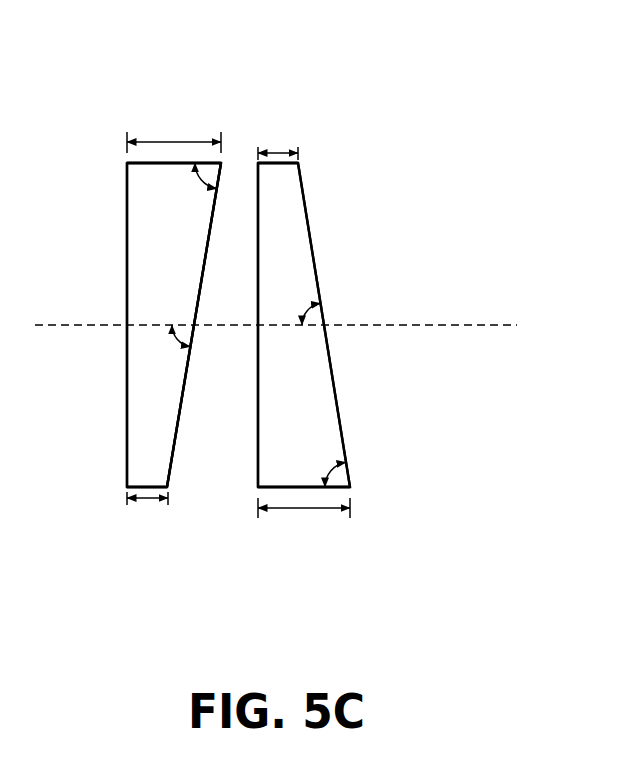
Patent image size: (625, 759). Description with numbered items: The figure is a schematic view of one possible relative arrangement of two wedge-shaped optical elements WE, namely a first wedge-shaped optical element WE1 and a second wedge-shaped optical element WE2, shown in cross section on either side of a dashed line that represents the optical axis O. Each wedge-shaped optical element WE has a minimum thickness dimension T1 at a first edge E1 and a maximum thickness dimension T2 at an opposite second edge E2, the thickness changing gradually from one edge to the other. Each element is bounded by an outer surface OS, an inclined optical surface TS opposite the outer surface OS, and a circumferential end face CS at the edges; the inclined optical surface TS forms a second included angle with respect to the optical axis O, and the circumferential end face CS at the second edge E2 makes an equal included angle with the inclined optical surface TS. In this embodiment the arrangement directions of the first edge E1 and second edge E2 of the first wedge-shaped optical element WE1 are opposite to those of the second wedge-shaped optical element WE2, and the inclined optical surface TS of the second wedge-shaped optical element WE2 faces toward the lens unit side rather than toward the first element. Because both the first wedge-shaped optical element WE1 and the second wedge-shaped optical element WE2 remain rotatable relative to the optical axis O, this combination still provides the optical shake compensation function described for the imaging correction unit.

The wedge-shaped optical element WE is at (352, 87).
The first wedge-shaped optical element WE1 is at (143, 263).
The second wedge-shaped optical element WE2 is at (315, 380).
The circumferential end face CS is at (164, 160).
The first edge E1 is at (270, 158).
The second edge E2 is at (187, 163).
The minimum thickness dimension T1 is at (212, 324).
The maximum thickness dimension T2 is at (238, 326).
The outer surface OS is at (255, 267).
The inclined optical surface TS is at (315, 256).
The optical axis O is at (296, 326).